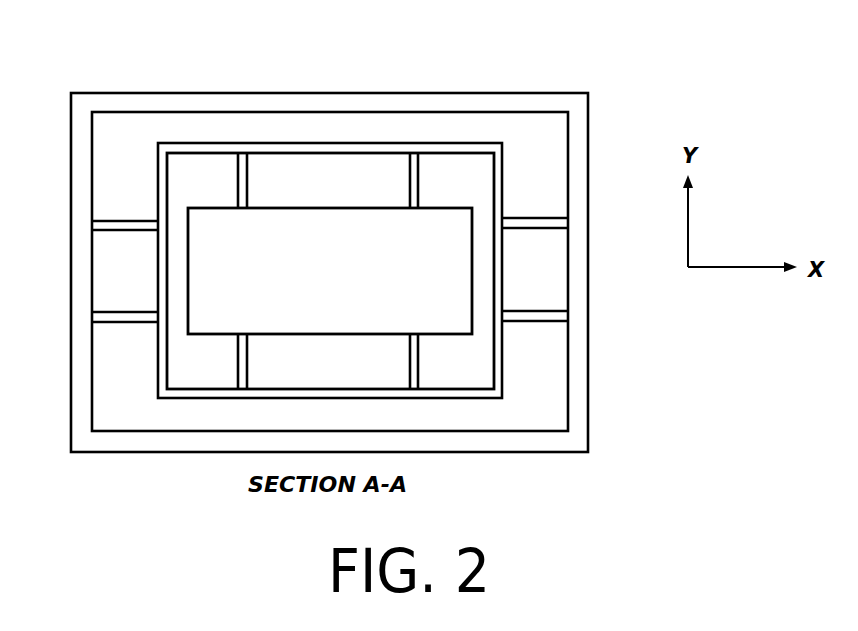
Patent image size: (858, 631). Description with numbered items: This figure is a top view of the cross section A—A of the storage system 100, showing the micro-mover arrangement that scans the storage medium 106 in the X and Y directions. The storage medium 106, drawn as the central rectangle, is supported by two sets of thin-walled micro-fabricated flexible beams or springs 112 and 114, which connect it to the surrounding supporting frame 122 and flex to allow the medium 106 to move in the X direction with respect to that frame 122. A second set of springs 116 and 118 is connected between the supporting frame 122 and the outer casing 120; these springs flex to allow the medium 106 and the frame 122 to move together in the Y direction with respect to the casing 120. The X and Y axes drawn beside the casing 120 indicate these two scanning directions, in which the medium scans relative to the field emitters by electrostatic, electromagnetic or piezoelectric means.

The MEMS device 100 is at (79, 64).
The storage medium 106 is at (356, 283).
The flexible beam 112 is at (247, 177).
The flexible beam 114 is at (418, 197).
The spring 116 is at (533, 312).
The spring 118 is at (525, 218).
The outer casing 120 is at (577, 393).
The supporting frame 122 is at (503, 163).